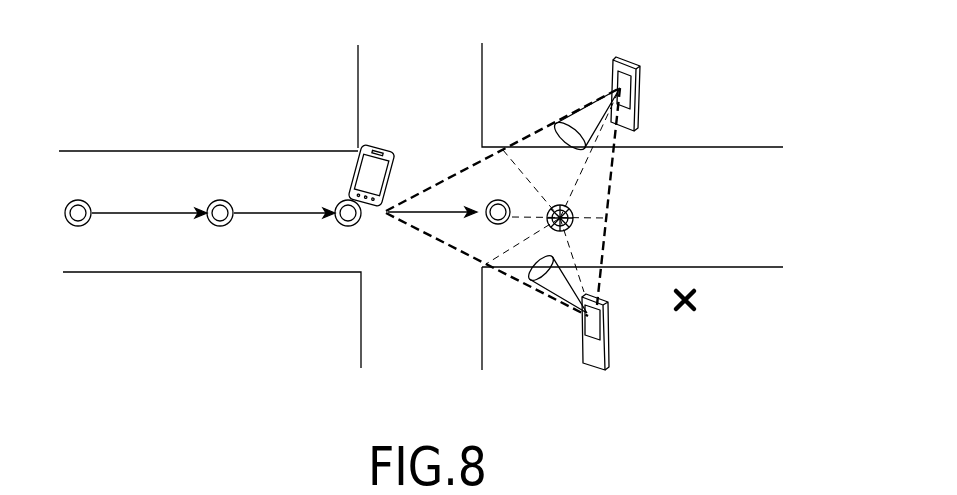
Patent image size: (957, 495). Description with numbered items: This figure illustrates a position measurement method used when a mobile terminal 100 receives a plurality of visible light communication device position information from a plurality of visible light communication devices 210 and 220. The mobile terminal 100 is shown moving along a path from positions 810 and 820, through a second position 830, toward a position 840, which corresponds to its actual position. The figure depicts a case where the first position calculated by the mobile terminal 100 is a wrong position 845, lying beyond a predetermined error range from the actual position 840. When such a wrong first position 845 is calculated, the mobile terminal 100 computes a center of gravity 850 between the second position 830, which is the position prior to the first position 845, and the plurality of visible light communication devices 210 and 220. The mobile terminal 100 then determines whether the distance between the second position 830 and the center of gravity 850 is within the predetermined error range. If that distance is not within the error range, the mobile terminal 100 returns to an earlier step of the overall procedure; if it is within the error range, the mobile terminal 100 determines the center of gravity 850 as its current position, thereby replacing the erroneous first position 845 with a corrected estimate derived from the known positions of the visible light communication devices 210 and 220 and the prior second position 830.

The mobile terminal 100 is at (379, 142).
The visible light communication device 210 is at (634, 68).
The visible light communication device 220 is at (603, 304).
The position 810 is at (80, 226).
The position 820 is at (222, 226).
The second position 830 is at (340, 225).
The position 840 is at (488, 224).
The wrong position 845 is at (696, 300).
The center of gravity 850 is at (573, 214).